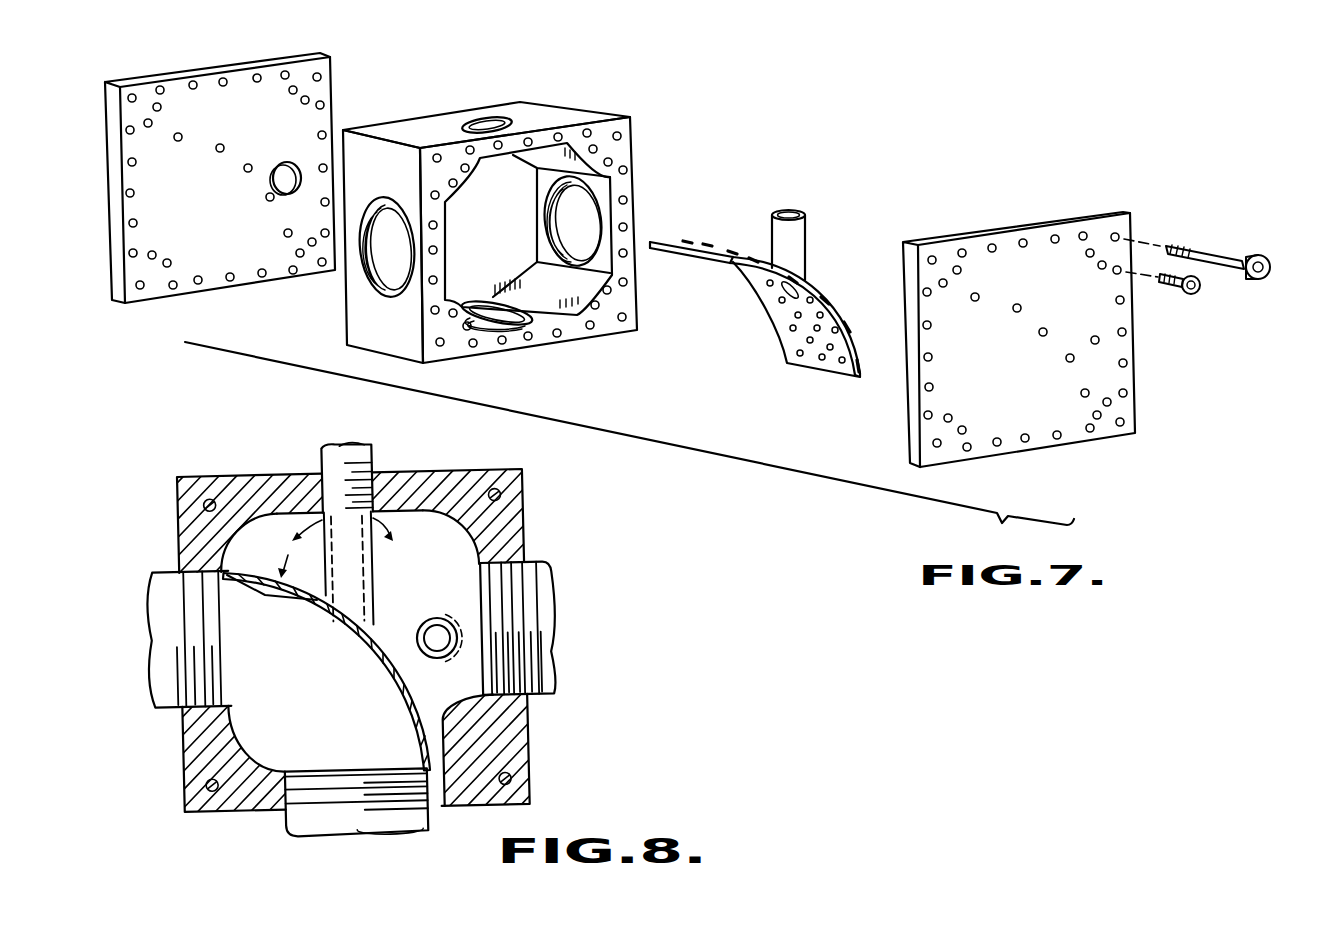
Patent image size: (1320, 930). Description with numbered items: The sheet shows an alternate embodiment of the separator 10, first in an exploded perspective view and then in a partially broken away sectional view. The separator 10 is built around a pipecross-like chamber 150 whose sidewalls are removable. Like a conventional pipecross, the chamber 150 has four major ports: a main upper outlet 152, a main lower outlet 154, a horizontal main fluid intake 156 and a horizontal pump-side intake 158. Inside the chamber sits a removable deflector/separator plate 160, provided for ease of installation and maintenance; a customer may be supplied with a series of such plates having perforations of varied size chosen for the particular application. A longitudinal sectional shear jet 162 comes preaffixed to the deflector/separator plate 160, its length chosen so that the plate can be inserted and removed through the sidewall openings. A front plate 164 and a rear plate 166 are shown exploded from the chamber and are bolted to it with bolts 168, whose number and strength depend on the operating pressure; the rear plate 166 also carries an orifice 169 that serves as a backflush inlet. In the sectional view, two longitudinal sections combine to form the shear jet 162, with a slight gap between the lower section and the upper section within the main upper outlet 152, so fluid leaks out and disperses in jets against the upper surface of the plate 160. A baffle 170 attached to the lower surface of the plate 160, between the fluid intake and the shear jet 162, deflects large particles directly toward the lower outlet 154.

In FIG. 7, the separator 10 is at (740, 130).
In FIG. 7, the pipecross-like chamber 150 is at (580, 110).
In FIG. 8, the pipecross-like chamber 150 is at (518, 503).
In FIG. 7, the main upper outlet 152 is at (487, 121).
In FIG. 8, the main upper outlet 152 is at (372, 456).
In FIG. 7, the main lower outlet 154 is at (520, 320).
In FIG. 8, the main lower outlet 154 is at (322, 797).
In FIG. 7, the main fluid intake 156 is at (373, 273).
In FIG. 8, the main fluid intake 156 is at (180, 560).
In FIG. 7, the pump-side intake 158 is at (587, 219).
In FIG. 8, the pump-side intake 158 is at (517, 560).
In FIG. 7, the deflector/separator plate 160 is at (818, 367).
In FIG. 8, the deflector/separator plate 160 is at (326, 644).
In FIG. 7, the shear jet 162 is at (803, 232).
In FIG. 8, the shear jet 162 is at (372, 570).
In FIG. 7, the front plate 164 is at (1005, 227).
In FIG. 7, the rear plate 166 is at (213, 283).
In FIG. 7, the bolts 168 is at (1272, 245).
In FIG. 7, the orifice 169 is at (285, 162).
In FIG. 8, the orifice 169 is at (435, 620).
In FIG. 8, the baffle 170 is at (263, 597).